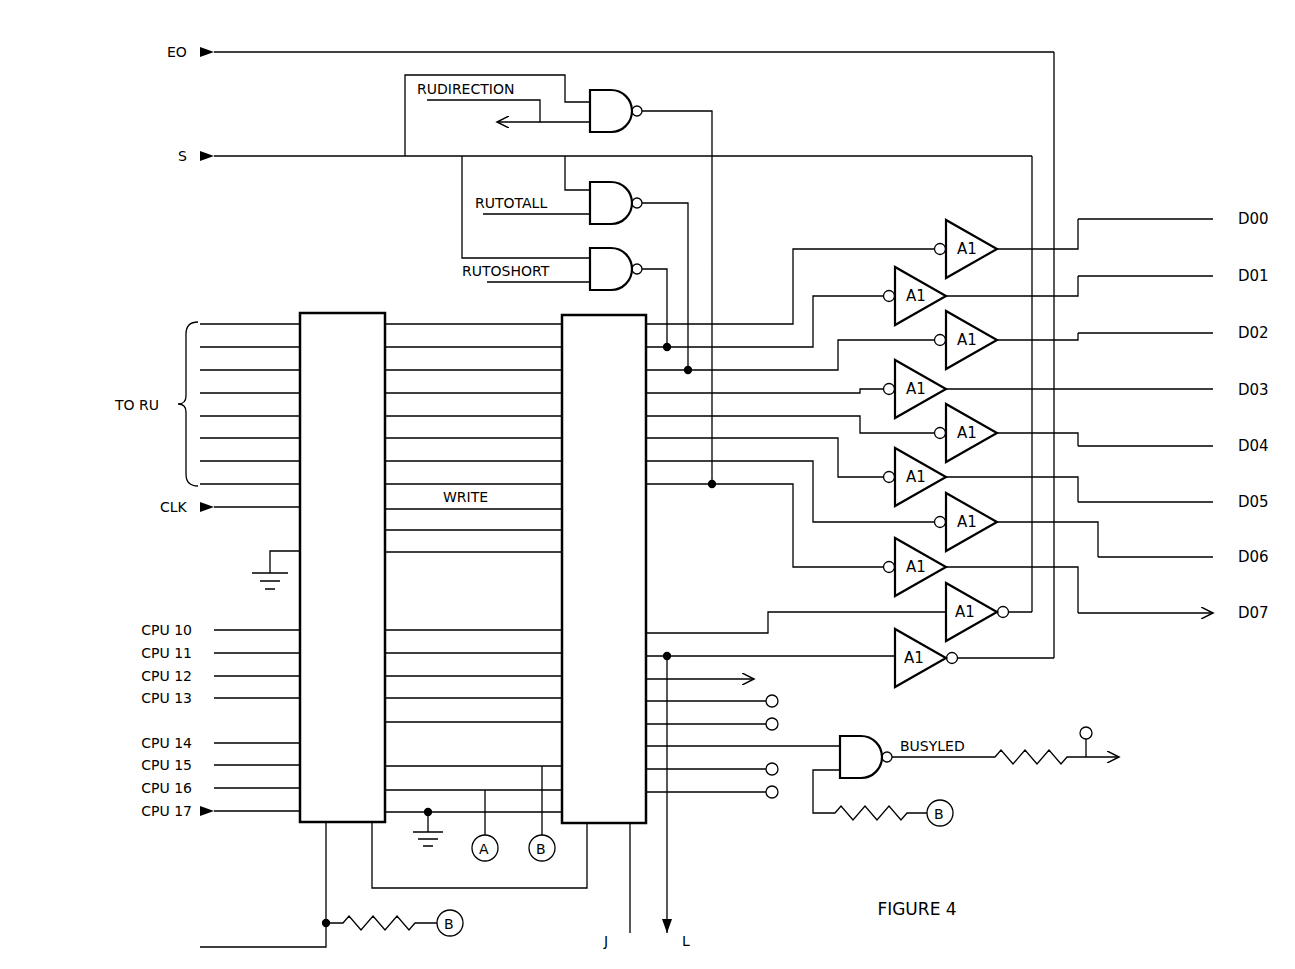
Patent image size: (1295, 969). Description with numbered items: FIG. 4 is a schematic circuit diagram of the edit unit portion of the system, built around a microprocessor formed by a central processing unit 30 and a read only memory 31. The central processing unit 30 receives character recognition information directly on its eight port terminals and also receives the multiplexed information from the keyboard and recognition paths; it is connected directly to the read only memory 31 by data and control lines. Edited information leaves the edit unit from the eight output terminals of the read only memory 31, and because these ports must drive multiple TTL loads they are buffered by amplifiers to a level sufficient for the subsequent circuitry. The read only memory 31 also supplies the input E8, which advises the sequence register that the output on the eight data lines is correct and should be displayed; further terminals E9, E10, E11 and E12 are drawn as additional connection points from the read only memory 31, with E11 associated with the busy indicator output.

The central processing unit 30 is at (386, 594).
The read only memory 31 is at (648, 594).
The input E8 is at (725, 701).
The connection point E9 is at (725, 769).
The connection point E10 is at (727, 792).
The connection point E11 is at (1085, 733).
The connection point E12 is at (729, 724).